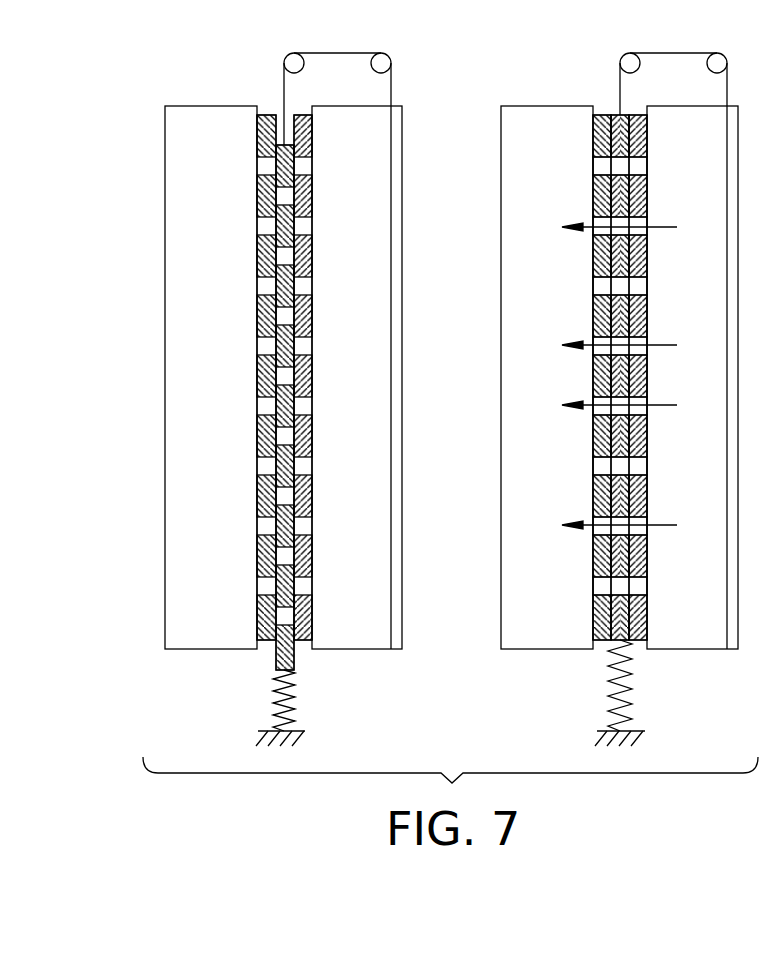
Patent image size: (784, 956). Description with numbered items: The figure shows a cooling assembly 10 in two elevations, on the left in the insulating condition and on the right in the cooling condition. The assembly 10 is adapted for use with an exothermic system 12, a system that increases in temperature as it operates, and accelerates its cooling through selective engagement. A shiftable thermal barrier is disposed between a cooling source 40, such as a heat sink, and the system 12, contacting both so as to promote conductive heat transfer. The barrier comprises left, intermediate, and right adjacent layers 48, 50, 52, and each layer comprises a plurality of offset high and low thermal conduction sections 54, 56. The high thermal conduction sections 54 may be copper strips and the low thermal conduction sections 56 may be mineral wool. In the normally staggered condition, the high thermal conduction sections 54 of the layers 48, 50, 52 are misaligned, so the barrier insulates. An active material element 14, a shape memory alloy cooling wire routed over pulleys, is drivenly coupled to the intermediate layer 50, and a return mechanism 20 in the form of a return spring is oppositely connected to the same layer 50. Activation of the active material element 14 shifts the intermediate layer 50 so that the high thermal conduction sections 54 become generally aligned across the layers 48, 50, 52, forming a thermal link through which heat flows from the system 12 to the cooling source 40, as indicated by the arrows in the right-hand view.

The cooling assembly 10 is at (110, 131).
The exothermic system 12 is at (366, 364).
The cooling source 40 is at (224, 364).
The active material element 14 is at (328, 53).
The left layer 48 is at (268, 113).
The right layer 52 is at (300, 113).
The intermediate layer 50 is at (275, 659).
The return mechanism 20 is at (290, 698).
The low thermal conduction sections 56 is at (593, 135).
The high thermal conduction sections 54 is at (593, 165).